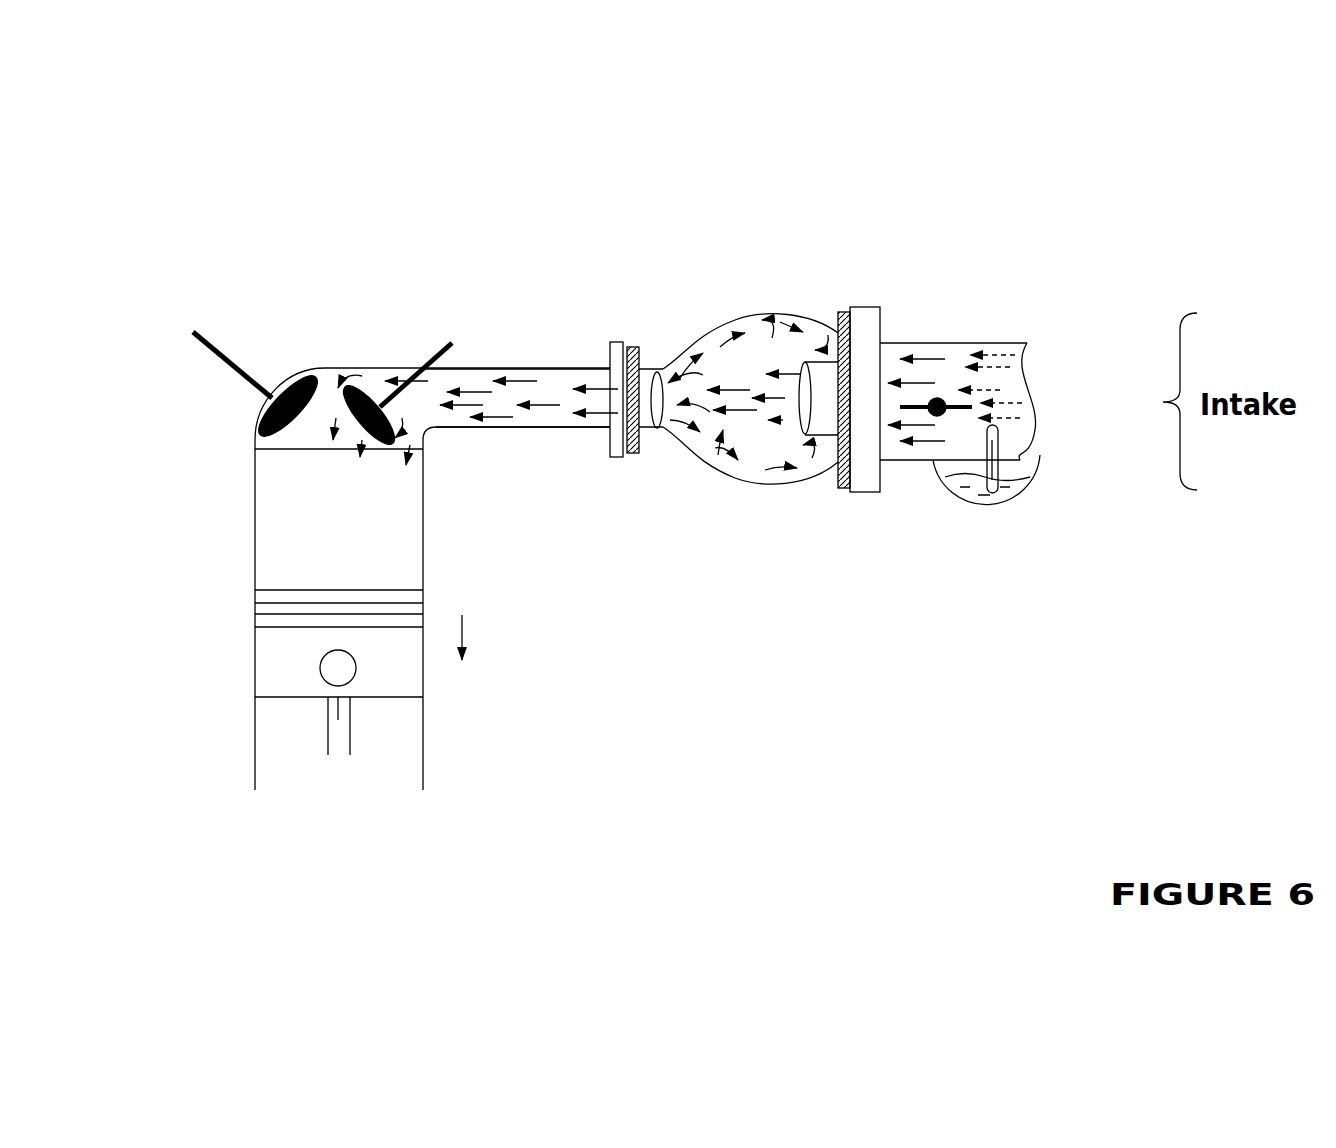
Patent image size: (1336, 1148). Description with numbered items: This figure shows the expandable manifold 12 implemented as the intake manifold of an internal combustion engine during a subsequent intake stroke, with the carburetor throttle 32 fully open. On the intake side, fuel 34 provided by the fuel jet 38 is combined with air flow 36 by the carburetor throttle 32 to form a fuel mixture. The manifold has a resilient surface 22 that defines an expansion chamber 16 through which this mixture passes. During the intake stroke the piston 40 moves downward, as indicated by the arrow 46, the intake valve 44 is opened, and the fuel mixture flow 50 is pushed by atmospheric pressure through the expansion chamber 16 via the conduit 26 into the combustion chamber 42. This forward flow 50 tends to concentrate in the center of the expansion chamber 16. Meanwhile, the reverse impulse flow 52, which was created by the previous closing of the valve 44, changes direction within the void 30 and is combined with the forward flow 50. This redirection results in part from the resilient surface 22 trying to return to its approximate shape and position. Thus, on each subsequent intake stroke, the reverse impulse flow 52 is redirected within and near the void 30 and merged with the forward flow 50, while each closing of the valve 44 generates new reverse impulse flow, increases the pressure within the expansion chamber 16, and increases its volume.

The expandable manifold 12 is at (727, 145).
The expansion chamber 16 is at (723, 430).
The resilient surface 22 is at (702, 348).
The conduit 26 is at (818, 382).
The void 30 is at (800, 460).
The carburetor throttle 32 is at (937, 400).
The fuel 34 is at (1000, 498).
The air flow 36 is at (988, 388).
The fuel jet 38 is at (993, 468).
The piston 40 is at (260, 602).
The combustion chamber 42 is at (290, 532).
The valve 44 is at (350, 383).
The arrow 46 is at (462, 628).
The fuel mixture flow 50 is at (497, 417).
The reverse impulse flow 52 is at (790, 322).